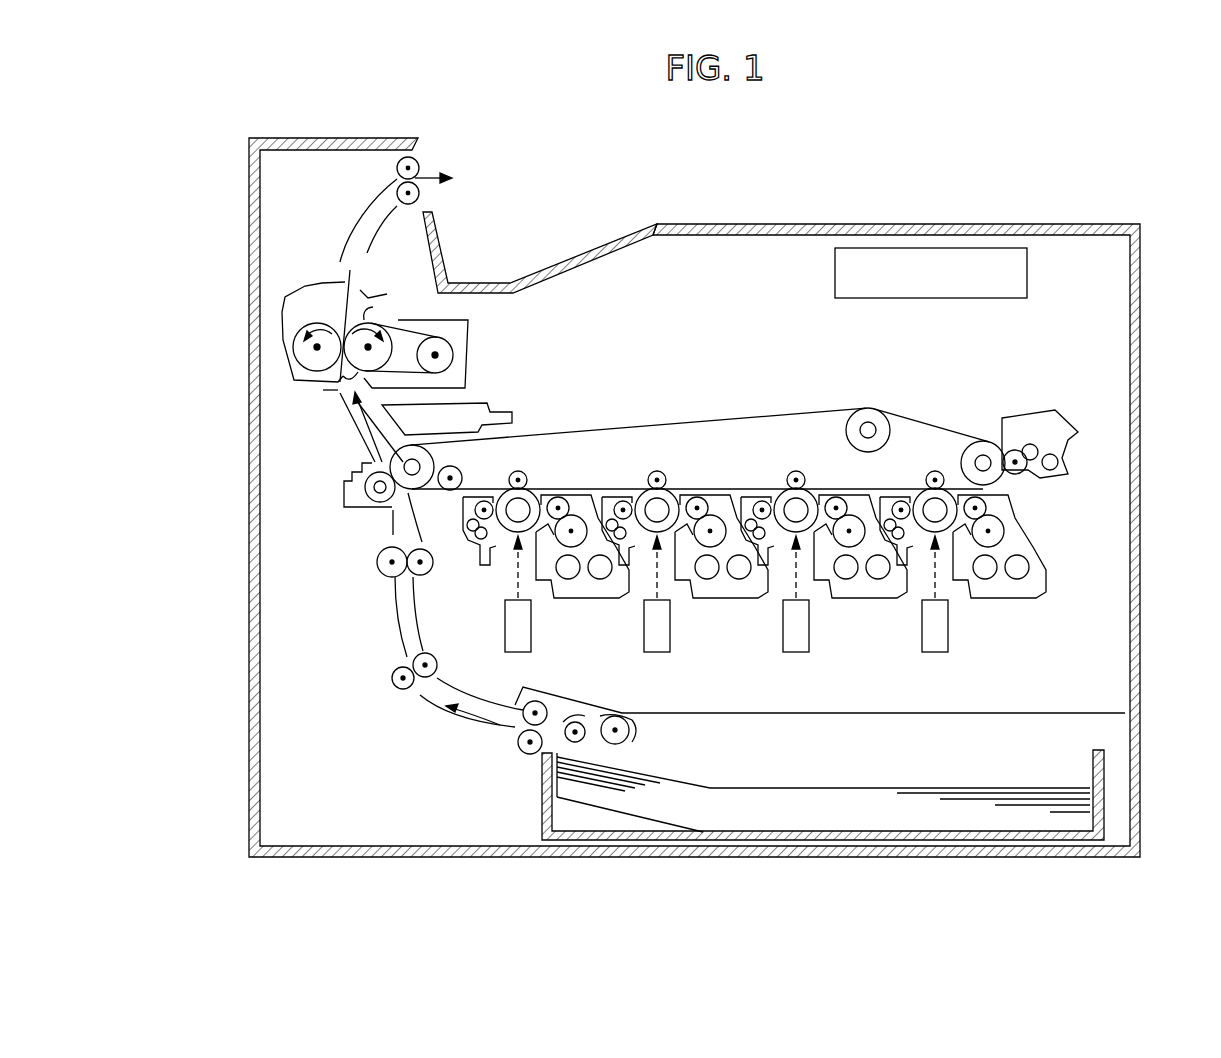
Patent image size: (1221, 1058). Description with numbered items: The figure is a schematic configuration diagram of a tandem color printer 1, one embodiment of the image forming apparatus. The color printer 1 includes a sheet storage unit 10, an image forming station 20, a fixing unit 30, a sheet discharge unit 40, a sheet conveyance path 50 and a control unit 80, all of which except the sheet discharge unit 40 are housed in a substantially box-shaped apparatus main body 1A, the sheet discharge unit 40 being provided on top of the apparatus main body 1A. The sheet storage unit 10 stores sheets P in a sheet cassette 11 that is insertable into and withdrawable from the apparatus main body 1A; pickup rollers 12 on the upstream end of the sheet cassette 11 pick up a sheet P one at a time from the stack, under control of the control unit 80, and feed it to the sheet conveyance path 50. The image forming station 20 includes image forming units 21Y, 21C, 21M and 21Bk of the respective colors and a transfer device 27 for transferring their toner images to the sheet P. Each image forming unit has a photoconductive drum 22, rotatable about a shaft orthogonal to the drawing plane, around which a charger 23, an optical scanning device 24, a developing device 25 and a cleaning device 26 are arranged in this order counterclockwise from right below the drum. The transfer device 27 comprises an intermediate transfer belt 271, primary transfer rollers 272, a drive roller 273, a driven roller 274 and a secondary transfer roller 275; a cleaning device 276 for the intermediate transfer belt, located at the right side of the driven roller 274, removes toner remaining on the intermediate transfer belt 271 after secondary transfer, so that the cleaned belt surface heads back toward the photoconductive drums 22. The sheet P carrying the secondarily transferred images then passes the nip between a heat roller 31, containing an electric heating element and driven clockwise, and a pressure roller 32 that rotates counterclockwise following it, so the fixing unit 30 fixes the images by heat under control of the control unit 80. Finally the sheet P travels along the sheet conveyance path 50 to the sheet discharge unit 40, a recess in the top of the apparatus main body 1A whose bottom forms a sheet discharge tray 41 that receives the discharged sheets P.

The color printer 1 is at (1113, 160).
The apparatus main body 1A is at (1140, 258).
The sheet storage unit 10 is at (1028, 773).
The sheet cassette 11 is at (688, 838).
The pickup rollers 12 is at (613, 745).
The image forming station 20 is at (1033, 383).
The image forming unit 21Bk is at (535, 476).
The image forming unit 21M is at (673, 472).
The image forming unit 21C is at (783, 472).
The image forming unit 21Y is at (913, 478).
The photoconductive drum 22 is at (955, 486).
The charger 23 is at (508, 548).
The optical scanning device 24 is at (531, 638).
The developing device 25 is at (1025, 535).
The cleaning device 26 is at (883, 488).
The transfer device 27 is at (532, 411).
The intermediate transfer belt 271 is at (643, 422).
The primary transfer rollers 272 is at (514, 471).
The drive roller 273 is at (424, 458).
The driven roller 274 is at (984, 460).
The secondary transfer roller 275 is at (372, 495).
The cleaning device for the intermediate transfer belt 276 is at (1032, 414).
The fixing unit 30 is at (300, 279).
The heat roller 31 is at (337, 390).
The pressure roller 32 is at (318, 355).
The sheet discharge unit 40 is at (632, 194).
The sheet discharge tray 41 is at (540, 268).
The sheet conveyance path 50 is at (390, 632).
The control unit 80 is at (1027, 276).
The sheet P is at (780, 797).